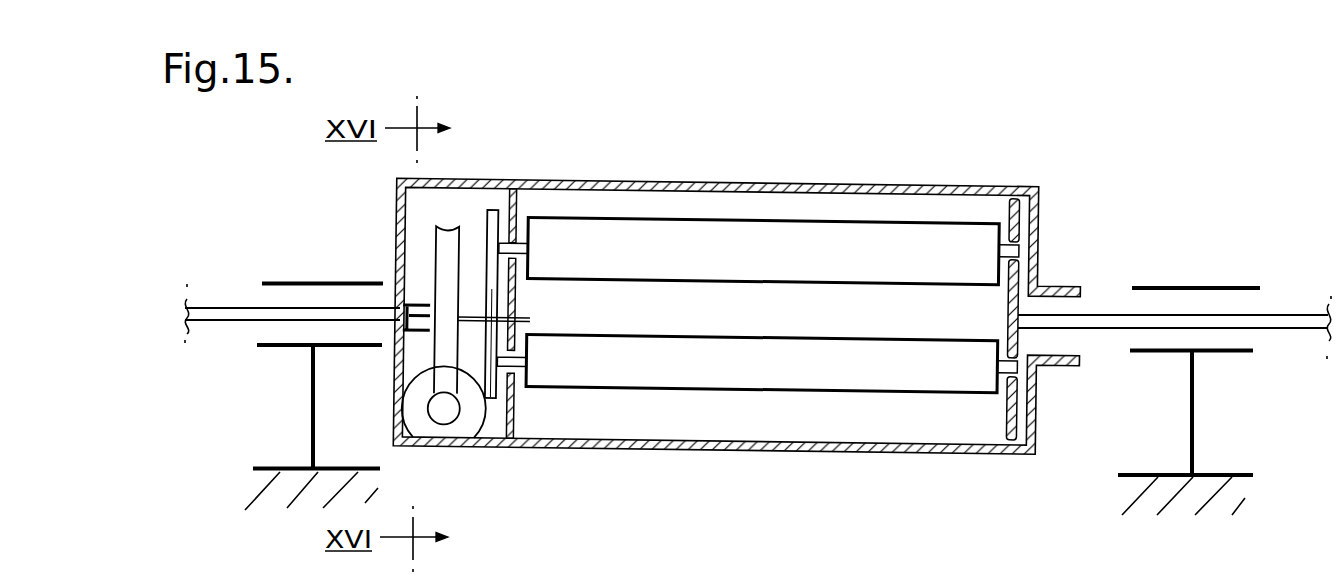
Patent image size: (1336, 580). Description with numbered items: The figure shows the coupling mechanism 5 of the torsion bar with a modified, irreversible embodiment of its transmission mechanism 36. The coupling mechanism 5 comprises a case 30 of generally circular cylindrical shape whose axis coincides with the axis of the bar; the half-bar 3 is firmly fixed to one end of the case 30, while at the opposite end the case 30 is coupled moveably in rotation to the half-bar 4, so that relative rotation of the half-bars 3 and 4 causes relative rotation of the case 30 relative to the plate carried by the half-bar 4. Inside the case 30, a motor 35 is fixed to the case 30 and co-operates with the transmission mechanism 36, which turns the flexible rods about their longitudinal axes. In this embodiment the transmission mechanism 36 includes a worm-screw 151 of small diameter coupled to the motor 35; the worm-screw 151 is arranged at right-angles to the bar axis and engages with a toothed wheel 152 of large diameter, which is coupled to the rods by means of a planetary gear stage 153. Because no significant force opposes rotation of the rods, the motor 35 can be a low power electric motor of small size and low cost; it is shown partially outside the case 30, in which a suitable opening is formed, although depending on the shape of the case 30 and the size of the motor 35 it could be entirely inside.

The half-bar 3 is at (235, 308).
The half-bar 4 is at (1300, 316).
The coupling mechanism 5 is at (693, 310).
The case 30 is at (920, 184).
The motor 35 is at (441, 447).
The transmission mechanism 36 is at (467, 206).
The worm-screw 151 is at (463, 414).
The toothed wheel 152 is at (441, 247).
The planetary gear stage 153 is at (497, 195).